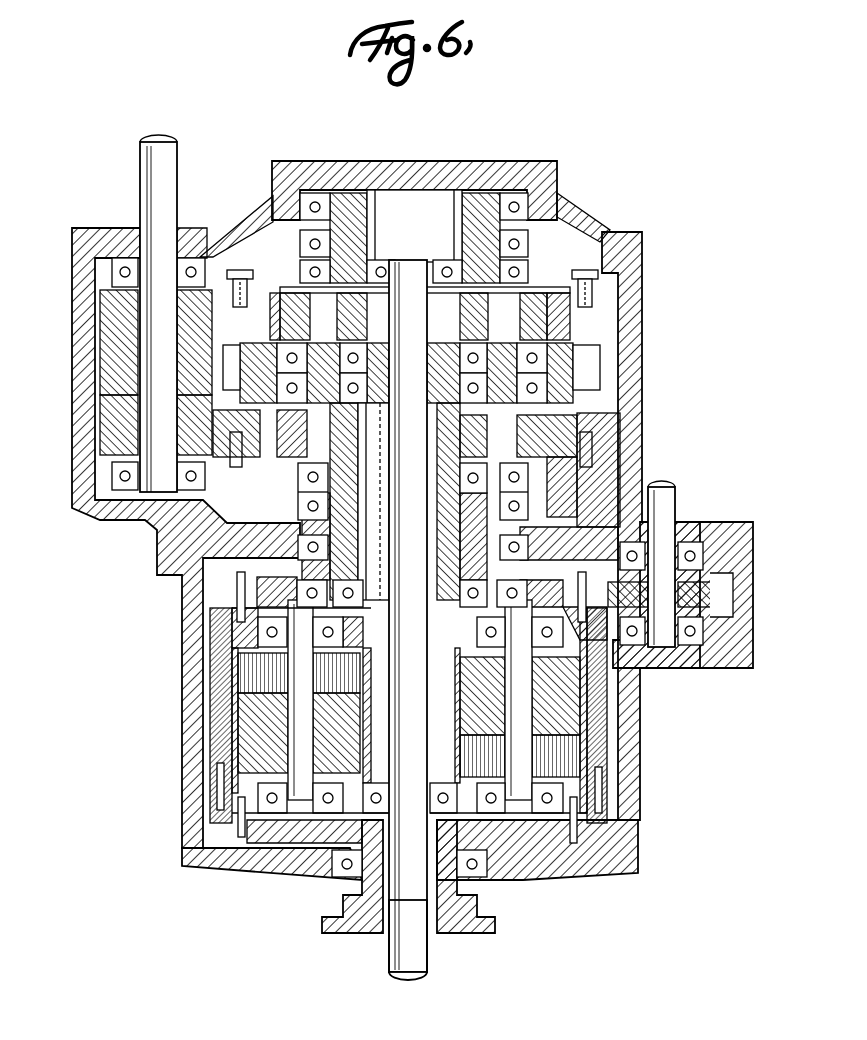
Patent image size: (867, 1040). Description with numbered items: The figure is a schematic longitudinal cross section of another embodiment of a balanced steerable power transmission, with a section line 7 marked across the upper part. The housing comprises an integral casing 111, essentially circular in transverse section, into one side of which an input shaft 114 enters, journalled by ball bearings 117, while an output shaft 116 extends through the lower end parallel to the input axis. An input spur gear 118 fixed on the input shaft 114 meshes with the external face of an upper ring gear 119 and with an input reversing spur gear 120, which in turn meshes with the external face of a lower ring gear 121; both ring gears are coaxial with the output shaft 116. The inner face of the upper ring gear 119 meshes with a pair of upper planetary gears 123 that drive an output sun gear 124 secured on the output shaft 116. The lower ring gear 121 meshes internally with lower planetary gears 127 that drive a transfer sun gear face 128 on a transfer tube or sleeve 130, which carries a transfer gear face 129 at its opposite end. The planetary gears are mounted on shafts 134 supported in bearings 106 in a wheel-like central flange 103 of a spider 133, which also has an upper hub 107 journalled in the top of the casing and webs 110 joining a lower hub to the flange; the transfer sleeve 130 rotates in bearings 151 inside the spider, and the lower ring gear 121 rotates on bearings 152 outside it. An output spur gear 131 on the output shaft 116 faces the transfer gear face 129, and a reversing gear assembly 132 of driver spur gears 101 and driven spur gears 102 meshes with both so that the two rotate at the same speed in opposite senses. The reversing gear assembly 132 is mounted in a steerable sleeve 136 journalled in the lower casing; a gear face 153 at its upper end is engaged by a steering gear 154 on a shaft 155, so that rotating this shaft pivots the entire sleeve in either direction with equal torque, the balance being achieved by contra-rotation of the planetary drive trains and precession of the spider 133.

The section line 7- 7 is at (95, 228).
The driver spur gears 101 is at (238, 670).
The driven spur gears 102 is at (238, 752).
The central flange 103 is at (628, 352).
The bearings 106 is at (460, 357).
The upper hub 107 is at (490, 205).
The webs 110 is at (222, 600).
The casing 111 is at (650, 366).
The input shaft 114 is at (140, 152).
The output shaft 116 is at (389, 954).
The ball bearings 117 is at (113, 270).
The input spur gear 118 is at (105, 334).
The upper ring gear 119 is at (237, 268).
The input reversing spur gear 120 is at (105, 425).
The lower ring gear 121 is at (262, 507).
The upper planetary gears 123 is at (245, 278).
The output sun gear 124 is at (386, 293).
The lower planetary gears 127 is at (373, 440).
The transfer sun gear face 128 is at (370, 445).
The transfer gear face 129 is at (365, 677).
The transfer tube or sleeve 130 is at (373, 510).
The output spur gear 131 is at (240, 767).
The reversing gear assembly 132 is at (590, 717).
The spider 133 is at (380, 185).
The shafts 134 is at (360, 348).
The steerable sleeve 136 is at (217, 583).
The bearings 151 is at (490, 572).
The bearings 152 is at (590, 480).
The gear face 153 is at (670, 605).
The steering gear 154 is at (722, 593).
The shaft 155 is at (678, 503).